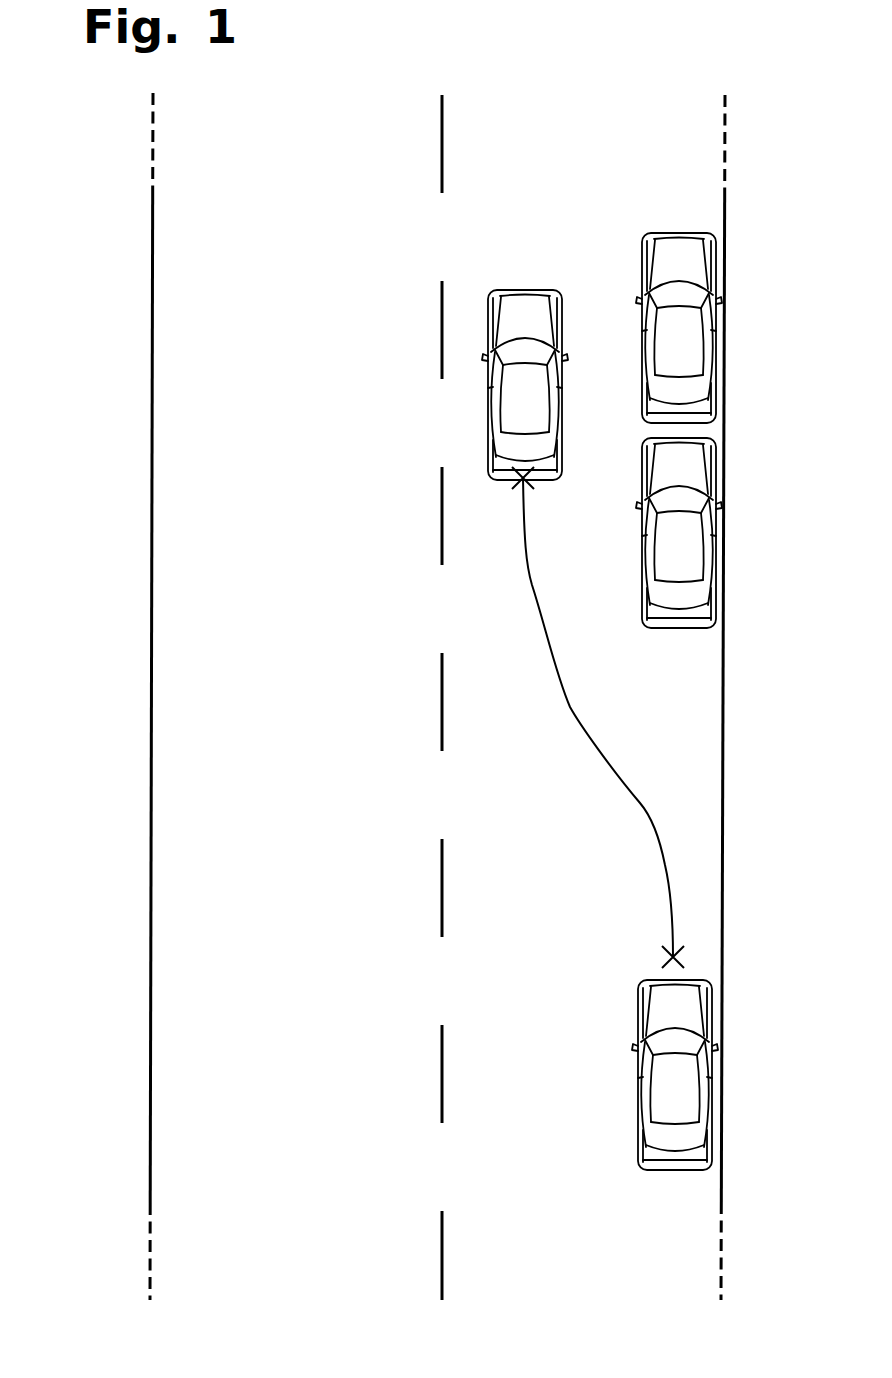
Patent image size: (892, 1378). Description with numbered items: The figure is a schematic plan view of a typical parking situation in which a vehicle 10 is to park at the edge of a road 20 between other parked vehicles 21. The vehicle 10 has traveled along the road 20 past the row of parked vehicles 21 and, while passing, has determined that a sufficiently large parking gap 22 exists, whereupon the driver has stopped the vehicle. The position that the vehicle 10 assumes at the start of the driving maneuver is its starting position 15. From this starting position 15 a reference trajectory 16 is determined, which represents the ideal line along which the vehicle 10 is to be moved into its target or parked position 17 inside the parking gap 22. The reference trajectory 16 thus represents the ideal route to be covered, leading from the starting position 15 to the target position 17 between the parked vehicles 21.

The vehicle 10 is at (515, 302).
The starting position 15 is at (522, 485).
The reference trajectory 16 is at (597, 753).
The target position 17 is at (687, 958).
The road 20 is at (170, 682).
The parked vehicles 21 is at (687, 412).
The parking gap 22 is at (713, 760).